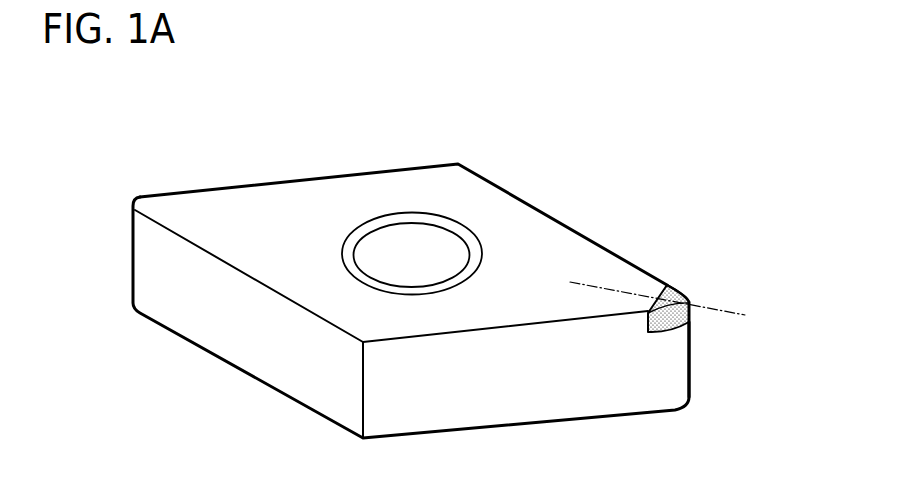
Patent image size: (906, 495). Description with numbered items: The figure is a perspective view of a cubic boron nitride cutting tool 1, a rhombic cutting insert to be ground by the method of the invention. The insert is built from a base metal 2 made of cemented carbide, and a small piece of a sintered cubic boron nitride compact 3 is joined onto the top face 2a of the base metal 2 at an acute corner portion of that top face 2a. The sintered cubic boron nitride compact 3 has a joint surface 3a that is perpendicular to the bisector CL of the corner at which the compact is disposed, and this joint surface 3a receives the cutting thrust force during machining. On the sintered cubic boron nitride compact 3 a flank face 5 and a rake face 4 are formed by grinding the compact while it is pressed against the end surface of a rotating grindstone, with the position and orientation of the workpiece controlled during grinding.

The cubic boron nitride cutting tool 1 is at (513, 187).
The base metal 2 is at (567, 388).
The top face 2a is at (213, 207).
The sintered cubic boron nitride compact 3 is at (690, 318).
The joint surface 3a is at (670, 283).
The rake face 4 is at (680, 290).
The flank face 5 is at (690, 378).
The bisector CL is at (675, 307).